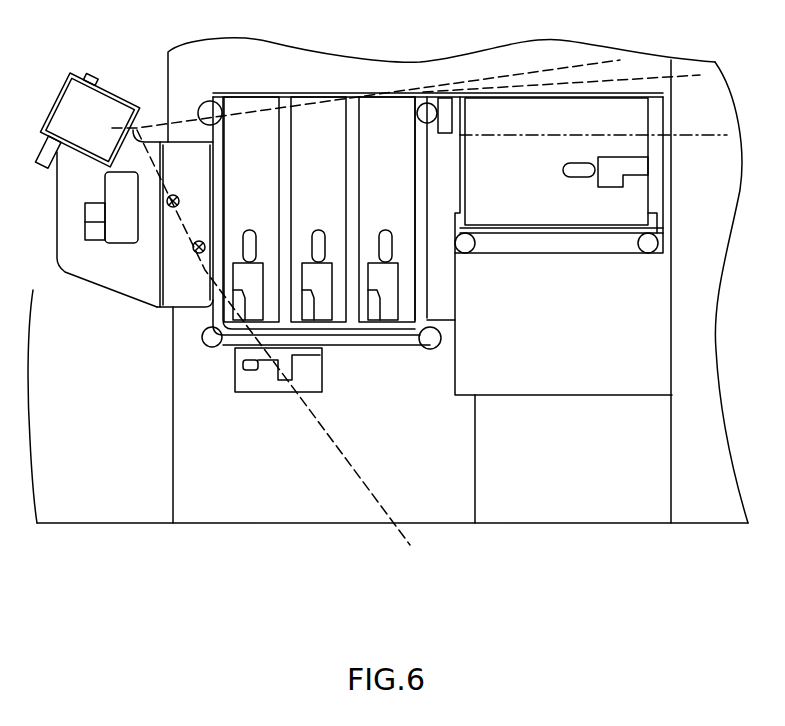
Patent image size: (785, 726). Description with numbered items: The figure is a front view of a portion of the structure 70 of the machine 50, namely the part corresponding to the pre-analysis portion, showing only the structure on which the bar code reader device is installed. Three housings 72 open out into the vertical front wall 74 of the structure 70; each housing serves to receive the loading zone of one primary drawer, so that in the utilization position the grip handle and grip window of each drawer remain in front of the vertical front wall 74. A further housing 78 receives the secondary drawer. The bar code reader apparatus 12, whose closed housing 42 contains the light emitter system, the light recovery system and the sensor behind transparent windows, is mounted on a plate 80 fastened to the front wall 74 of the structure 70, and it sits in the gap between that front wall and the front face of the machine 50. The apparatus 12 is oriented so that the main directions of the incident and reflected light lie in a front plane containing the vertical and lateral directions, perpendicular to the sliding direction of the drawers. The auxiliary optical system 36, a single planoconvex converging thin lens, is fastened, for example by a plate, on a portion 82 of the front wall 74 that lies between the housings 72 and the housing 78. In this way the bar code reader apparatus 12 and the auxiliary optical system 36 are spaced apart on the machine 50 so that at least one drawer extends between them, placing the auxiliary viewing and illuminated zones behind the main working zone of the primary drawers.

The bar code reader apparatus 12 is at (77, 118).
The housing 42 is at (84, 145).
The housings 72 is at (253, 117).
The auxiliary optical system 36 is at (447, 138).
The portion of the front wall 82 is at (442, 195).
The housing 78 is at (628, 120).
The plate 80 is at (85, 267).
The vertical front wall 74 is at (185, 337).
The structure 70 is at (212, 355).
The machine 50 is at (537, 412).